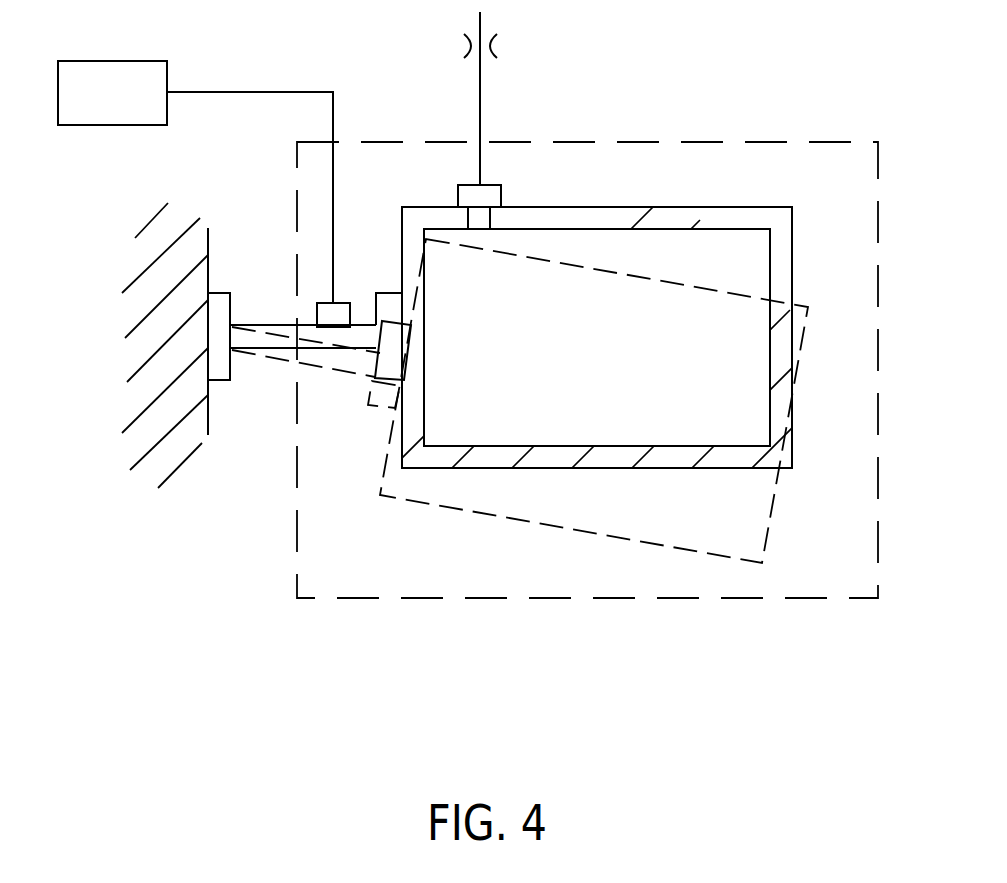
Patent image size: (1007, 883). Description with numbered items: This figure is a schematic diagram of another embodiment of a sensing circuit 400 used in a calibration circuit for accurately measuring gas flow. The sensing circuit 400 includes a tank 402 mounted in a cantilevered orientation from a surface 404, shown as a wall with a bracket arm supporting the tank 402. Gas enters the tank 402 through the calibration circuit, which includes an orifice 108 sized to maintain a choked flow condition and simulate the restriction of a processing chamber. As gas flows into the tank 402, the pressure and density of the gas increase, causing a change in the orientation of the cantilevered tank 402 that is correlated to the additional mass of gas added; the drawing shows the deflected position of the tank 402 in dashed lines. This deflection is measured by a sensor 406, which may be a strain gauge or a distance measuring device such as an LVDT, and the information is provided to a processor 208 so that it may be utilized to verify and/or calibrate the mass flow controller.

The orifice 108 is at (447, 50).
The processor 208 is at (138, 109).
The sensing circuit 400 is at (760, 139).
The tank 402 is at (625, 207).
The surface 404 is at (197, 250).
The sensor 406 is at (342, 303).